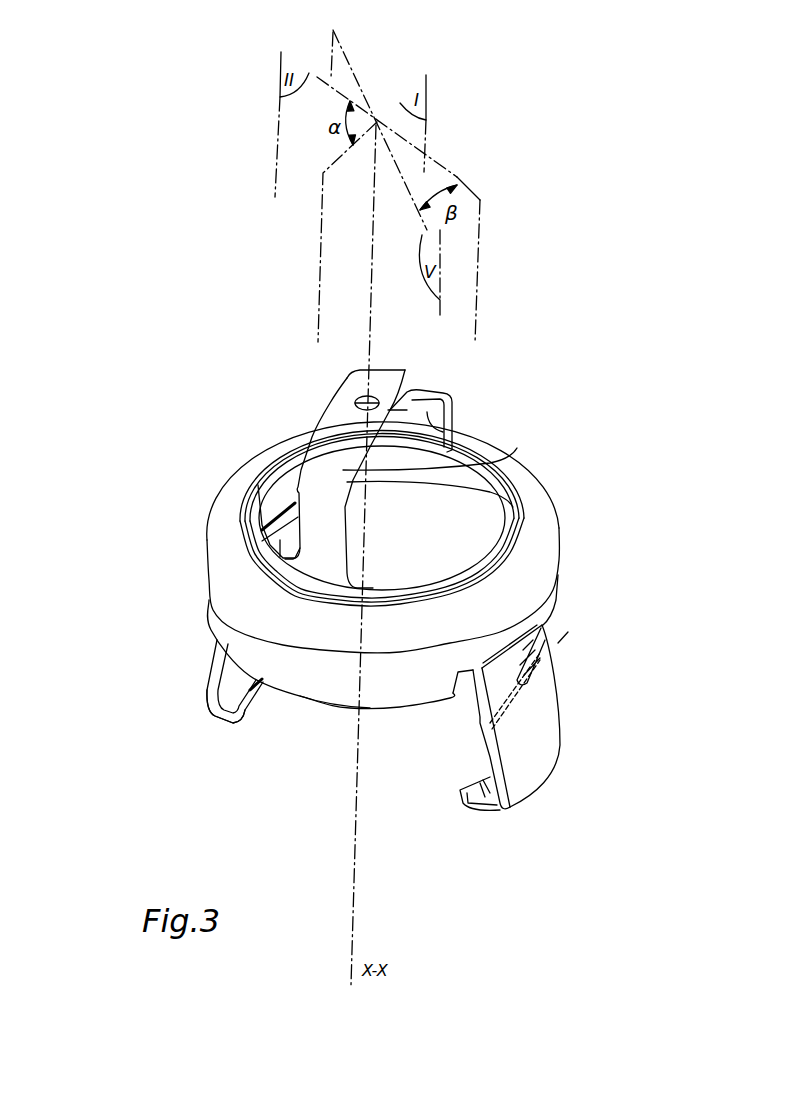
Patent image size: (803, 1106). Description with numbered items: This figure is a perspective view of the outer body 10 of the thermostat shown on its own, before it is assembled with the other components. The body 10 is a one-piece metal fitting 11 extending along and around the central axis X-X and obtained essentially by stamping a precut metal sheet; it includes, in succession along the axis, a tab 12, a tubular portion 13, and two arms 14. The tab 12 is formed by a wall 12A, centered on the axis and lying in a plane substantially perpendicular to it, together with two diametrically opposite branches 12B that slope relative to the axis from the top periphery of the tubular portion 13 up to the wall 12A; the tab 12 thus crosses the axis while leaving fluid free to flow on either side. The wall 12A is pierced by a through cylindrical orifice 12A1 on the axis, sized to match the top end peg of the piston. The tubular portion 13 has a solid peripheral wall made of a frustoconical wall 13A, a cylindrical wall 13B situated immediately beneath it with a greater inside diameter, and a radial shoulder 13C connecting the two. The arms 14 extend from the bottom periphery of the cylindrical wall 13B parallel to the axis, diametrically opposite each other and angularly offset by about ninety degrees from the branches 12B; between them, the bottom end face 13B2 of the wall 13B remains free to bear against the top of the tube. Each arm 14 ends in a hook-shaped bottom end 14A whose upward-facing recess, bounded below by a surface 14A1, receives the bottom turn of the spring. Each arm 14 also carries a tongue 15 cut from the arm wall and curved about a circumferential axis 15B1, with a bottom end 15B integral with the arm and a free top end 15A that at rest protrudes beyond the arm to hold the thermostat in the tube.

The outer body 10 is at (225, 453).
The one-piece metal fitting 11 is at (52, 528).
The tab 12 is at (297, 472).
The wall 12A is at (423, 456).
The through cylindrical orifice 12A1 is at (370, 397).
The branches 12B is at (500, 450).
The tubular portion 13 is at (202, 570).
The frustoconical wall 13A is at (530, 450).
The cylindrical wall 13B is at (550, 584).
The bottom end face 13B2 is at (335, 712).
The radial shoulder 13C is at (503, 502).
The arms 14 is at (480, 753).
The bottom end 14A is at (220, 713).
The surface 14A1 is at (487, 780).
The tongue 15 is at (532, 707).
The free top end 15A is at (542, 633).
The bottom end 15B is at (530, 680).
The axis 15B1 is at (456, 739).